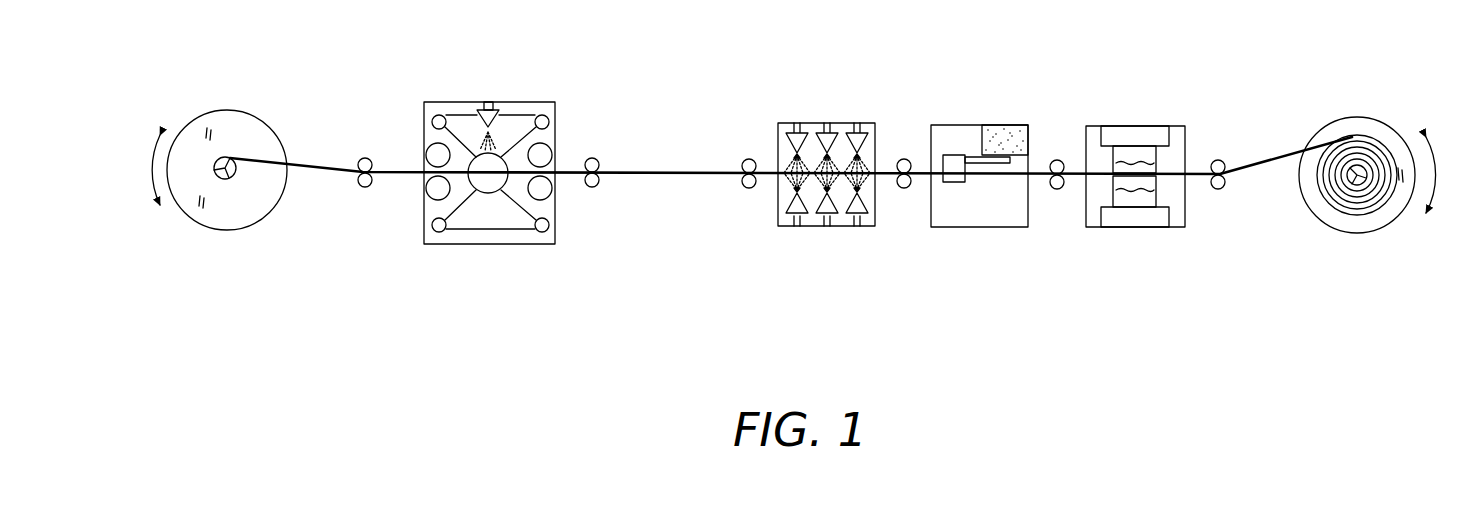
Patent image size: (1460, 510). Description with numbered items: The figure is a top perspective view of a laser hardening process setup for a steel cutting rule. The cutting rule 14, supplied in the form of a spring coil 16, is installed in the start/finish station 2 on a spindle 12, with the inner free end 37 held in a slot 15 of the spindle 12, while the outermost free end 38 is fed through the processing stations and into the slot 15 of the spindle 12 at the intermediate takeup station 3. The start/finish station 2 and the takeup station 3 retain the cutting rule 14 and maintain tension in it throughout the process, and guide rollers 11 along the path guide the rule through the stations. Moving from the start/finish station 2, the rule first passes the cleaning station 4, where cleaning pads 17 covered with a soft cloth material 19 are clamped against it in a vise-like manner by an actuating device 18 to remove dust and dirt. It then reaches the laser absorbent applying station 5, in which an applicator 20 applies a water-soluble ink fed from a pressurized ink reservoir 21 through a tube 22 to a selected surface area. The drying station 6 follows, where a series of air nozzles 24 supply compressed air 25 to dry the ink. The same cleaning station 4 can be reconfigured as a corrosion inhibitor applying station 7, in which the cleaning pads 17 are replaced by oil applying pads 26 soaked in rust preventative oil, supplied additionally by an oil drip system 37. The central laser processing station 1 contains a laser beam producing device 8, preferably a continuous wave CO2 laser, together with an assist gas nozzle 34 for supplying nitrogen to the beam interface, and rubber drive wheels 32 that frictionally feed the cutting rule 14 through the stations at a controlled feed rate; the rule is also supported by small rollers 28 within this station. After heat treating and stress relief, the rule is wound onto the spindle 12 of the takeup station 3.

The central laser processing station 1 is at (489, 161).
The start/finish station 2 is at (1379, 153).
The intermediate takeup station 3 is at (232, 150).
The cleaning station 4 is at (1162, 154).
The laser absorbent applying station 5 is at (989, 149).
The laser absorbent drying station 6 is at (822, 156).
The corrosion inhibitor applying station 7 is at (1162, 162).
The laser beam producing device 8 is at (487, 195).
The guide rollers 11 is at (360, 160).
The spindle 12 is at (200, 110).
The cutting rule 14 is at (1256, 150).
The slot 15 is at (228, 180).
The spring coil 16 is at (1357, 135).
The cleaning pads 17 is at (1122, 140).
The actuating device 18 is at (1150, 222).
The soft cloth material 19 is at (1160, 163).
The applicator 20 is at (950, 183).
The ink reservoir 21 is at (1008, 128).
The tube 22 is at (968, 150).
The air nozzles 24 is at (857, 122).
The compressed air 25 is at (790, 160).
The oil applying pads 26 is at (1150, 130).
The guide rolls 28 is at (440, 232).
The drive wheels 32 is at (428, 150).
The assist gas nozzle 34 is at (478, 112).
The free end 37 is at (1375, 190).
The outermost free end 38 is at (215, 175).